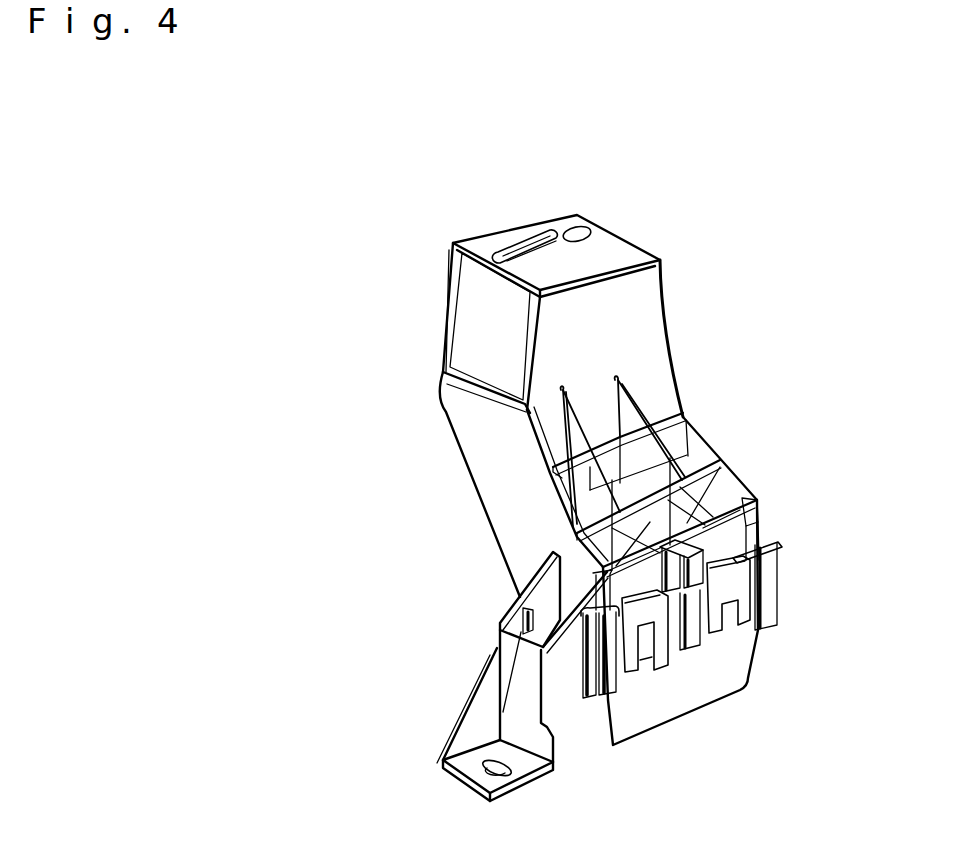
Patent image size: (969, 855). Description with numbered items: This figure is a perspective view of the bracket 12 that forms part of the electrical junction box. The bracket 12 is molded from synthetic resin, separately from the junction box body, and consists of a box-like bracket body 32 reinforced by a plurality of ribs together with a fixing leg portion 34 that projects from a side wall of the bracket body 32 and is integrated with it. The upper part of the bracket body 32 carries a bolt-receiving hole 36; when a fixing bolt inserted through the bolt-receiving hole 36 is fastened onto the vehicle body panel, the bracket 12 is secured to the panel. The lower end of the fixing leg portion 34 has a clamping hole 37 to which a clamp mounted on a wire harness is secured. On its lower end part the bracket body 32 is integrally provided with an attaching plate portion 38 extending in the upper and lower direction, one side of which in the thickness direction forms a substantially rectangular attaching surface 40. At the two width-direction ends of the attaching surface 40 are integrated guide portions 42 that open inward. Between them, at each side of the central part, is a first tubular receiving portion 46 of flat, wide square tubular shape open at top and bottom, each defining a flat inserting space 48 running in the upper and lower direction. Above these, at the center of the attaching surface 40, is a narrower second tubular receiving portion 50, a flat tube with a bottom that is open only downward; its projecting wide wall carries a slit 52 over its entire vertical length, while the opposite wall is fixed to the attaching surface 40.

The bracket 12 is at (683, 184).
The bracket body 32 is at (666, 330).
The fixing leg portion 34 is at (515, 690).
The bolt-receiving hole 36 is at (521, 246).
The clamping hole 37 is at (506, 778).
The attaching plate portion 38 is at (708, 690).
The attaching surface 40 is at (675, 680).
The guide portion 42 is at (772, 610).
The first tubular receiving portion 46 is at (745, 585).
The inserting space 48 is at (708, 627).
The second tubular receiving portion 50 is at (672, 503).
The slit 52 is at (745, 506).